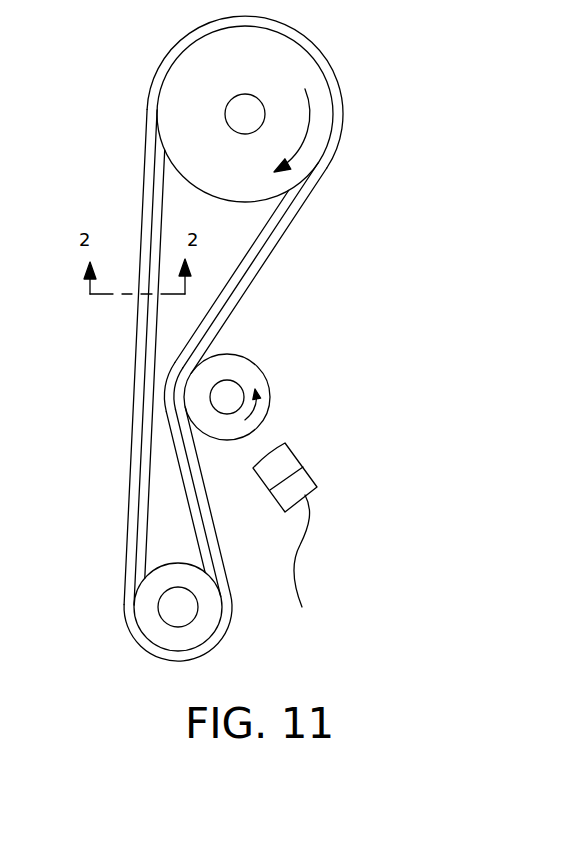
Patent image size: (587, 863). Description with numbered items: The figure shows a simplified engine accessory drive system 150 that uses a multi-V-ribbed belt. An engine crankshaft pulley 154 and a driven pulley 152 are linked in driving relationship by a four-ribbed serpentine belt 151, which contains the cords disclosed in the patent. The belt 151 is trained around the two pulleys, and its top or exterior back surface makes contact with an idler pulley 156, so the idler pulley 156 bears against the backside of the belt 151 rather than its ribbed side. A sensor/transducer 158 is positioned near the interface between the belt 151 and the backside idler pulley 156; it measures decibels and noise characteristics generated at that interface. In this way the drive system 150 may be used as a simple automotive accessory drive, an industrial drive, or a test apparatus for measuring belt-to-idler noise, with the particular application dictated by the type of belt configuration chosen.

The engine accessory drive system 150 is at (192, 338).
The four-ribbed serpentine belt 151 is at (240, 300).
The driven pulley 152 is at (187, 71).
The engine crankshaft pulley 154 is at (157, 626).
The idler pulley 156 is at (270, 400).
The sensor/transducer 158 is at (270, 493).